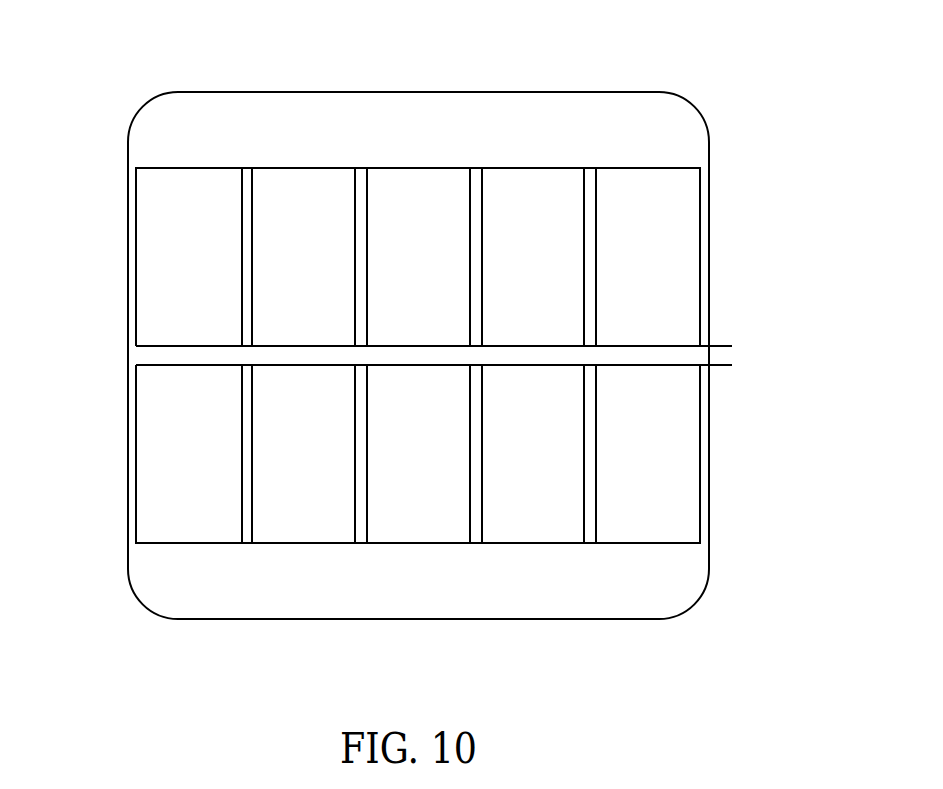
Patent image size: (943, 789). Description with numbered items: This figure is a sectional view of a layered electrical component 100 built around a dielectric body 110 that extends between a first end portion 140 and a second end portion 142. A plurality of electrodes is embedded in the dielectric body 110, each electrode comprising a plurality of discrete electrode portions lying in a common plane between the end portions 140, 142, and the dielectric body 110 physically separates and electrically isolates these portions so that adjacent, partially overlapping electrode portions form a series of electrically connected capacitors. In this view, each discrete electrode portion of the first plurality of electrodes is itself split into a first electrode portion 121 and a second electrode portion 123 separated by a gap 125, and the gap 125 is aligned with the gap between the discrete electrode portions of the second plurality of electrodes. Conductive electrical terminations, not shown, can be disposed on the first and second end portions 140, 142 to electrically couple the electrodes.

The electrical component 100 is at (118, 55).
The dielectric body 110 is at (605, 103).
The first electrode portion 121 is at (646, 208).
The second electrode portion 123 is at (646, 503).
The gap 125 is at (732, 355).
The first end portion 140 is at (128, 355).
The second end portion 142 is at (709, 300).